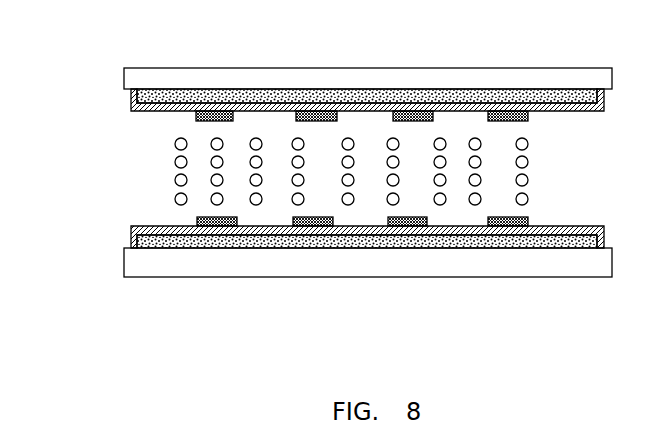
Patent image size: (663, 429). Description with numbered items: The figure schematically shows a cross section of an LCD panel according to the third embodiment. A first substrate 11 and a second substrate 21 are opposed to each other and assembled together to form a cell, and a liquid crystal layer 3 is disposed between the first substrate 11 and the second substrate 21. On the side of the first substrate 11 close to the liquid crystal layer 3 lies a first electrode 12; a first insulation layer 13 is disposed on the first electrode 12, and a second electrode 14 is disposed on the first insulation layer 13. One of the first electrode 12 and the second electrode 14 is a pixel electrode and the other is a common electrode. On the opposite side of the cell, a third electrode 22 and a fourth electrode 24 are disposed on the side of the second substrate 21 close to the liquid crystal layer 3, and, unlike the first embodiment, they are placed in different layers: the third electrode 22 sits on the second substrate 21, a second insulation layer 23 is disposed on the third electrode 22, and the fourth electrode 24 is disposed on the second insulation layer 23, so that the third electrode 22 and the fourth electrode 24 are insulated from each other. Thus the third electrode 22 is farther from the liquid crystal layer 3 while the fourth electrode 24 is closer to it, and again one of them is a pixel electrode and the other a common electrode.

The second substrate 21 is at (166, 78).
The third electrode 22 is at (310, 92).
The second insulation layer 23 is at (605, 105).
The fourth electrode 24 is at (488, 120).
The liquid crystal layer 3 is at (177, 178).
The first substrate 11 is at (157, 261).
The first electrode 12 is at (192, 243).
The first insulation layer 13 is at (512, 233).
The second electrode 14 is at (488, 226).